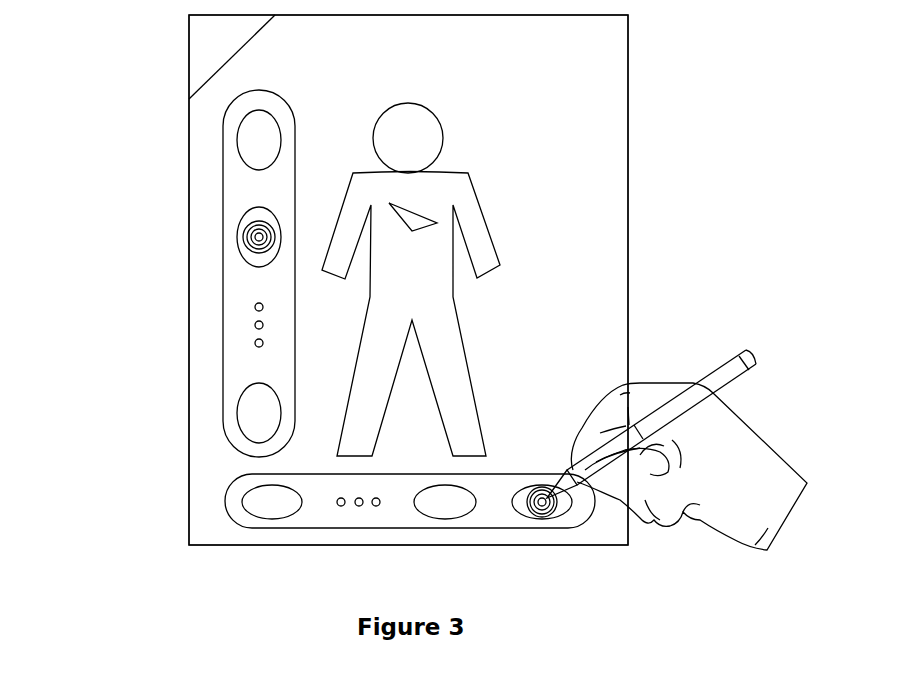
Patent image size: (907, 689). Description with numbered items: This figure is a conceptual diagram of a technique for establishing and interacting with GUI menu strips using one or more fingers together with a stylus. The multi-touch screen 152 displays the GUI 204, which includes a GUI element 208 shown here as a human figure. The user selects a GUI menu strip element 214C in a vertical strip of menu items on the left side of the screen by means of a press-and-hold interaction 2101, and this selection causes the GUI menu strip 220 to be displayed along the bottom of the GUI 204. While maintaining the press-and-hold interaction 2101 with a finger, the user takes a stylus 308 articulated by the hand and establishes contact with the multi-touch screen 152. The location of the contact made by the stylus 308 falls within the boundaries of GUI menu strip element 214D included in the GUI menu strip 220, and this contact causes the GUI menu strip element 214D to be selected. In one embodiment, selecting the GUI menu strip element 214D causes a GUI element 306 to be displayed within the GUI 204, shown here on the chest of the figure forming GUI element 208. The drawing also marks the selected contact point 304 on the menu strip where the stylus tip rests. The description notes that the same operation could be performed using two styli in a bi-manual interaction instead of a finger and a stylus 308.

The multi-touch screen 152 is at (189, 500).
The GUI 204 is at (598, 42).
The GUI menu strip element 214C is at (280, 218).
The press-and-hold interaction 2101 is at (244, 235).
The GUI element 208 is at (485, 212).
The GUI element 306 is at (421, 213).
The GUI menu strip 220 is at (240, 528).
The GUI menu strip element 214D is at (513, 513).
The selected target 304 is at (563, 506).
The stylus 308 is at (753, 432).